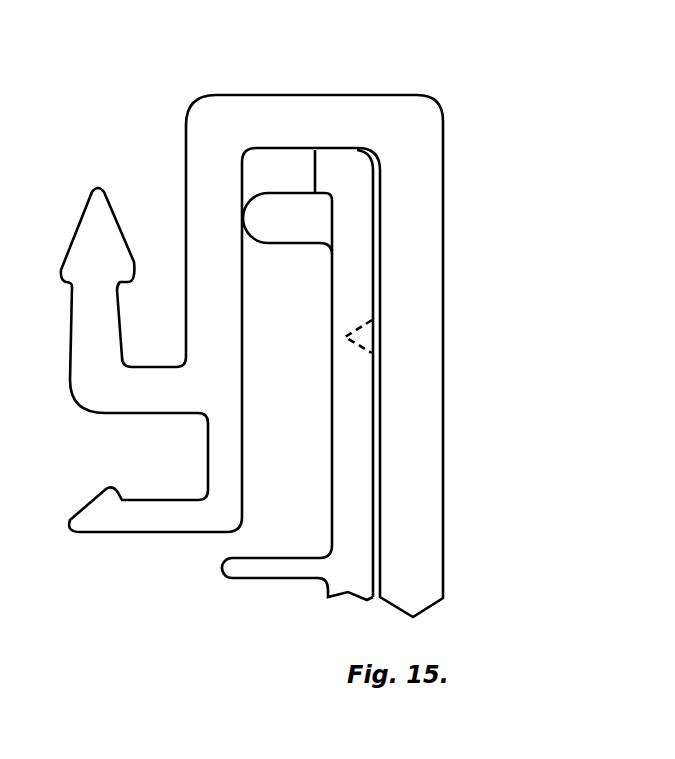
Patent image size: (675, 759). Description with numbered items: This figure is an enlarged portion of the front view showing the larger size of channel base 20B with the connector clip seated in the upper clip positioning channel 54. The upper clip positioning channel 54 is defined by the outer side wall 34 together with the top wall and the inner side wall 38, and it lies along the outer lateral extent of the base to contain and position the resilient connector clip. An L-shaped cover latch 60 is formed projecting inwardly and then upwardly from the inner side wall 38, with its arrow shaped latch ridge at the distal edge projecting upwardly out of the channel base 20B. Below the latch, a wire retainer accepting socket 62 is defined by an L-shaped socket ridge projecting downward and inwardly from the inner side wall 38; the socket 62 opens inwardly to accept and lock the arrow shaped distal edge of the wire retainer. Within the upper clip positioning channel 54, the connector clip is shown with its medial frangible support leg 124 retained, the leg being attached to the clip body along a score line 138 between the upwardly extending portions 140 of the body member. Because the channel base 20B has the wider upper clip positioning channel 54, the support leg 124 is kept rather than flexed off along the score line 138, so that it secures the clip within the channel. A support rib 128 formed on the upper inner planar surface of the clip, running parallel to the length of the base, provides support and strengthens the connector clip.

The channel base 20B is at (418, 95).
The side wall 34 is at (442, 427).
The inner side wall 38 is at (185, 145).
The upper clip positioning channel 54 is at (272, 513).
The cover latch 60 is at (72, 223).
The wire retainer accepting socket 62 is at (142, 450).
The frangible support leg 124 is at (273, 195).
The support rib 128 is at (285, 580).
The score line 138 is at (362, 333).
The upwardly extending portions 140 is at (350, 177).